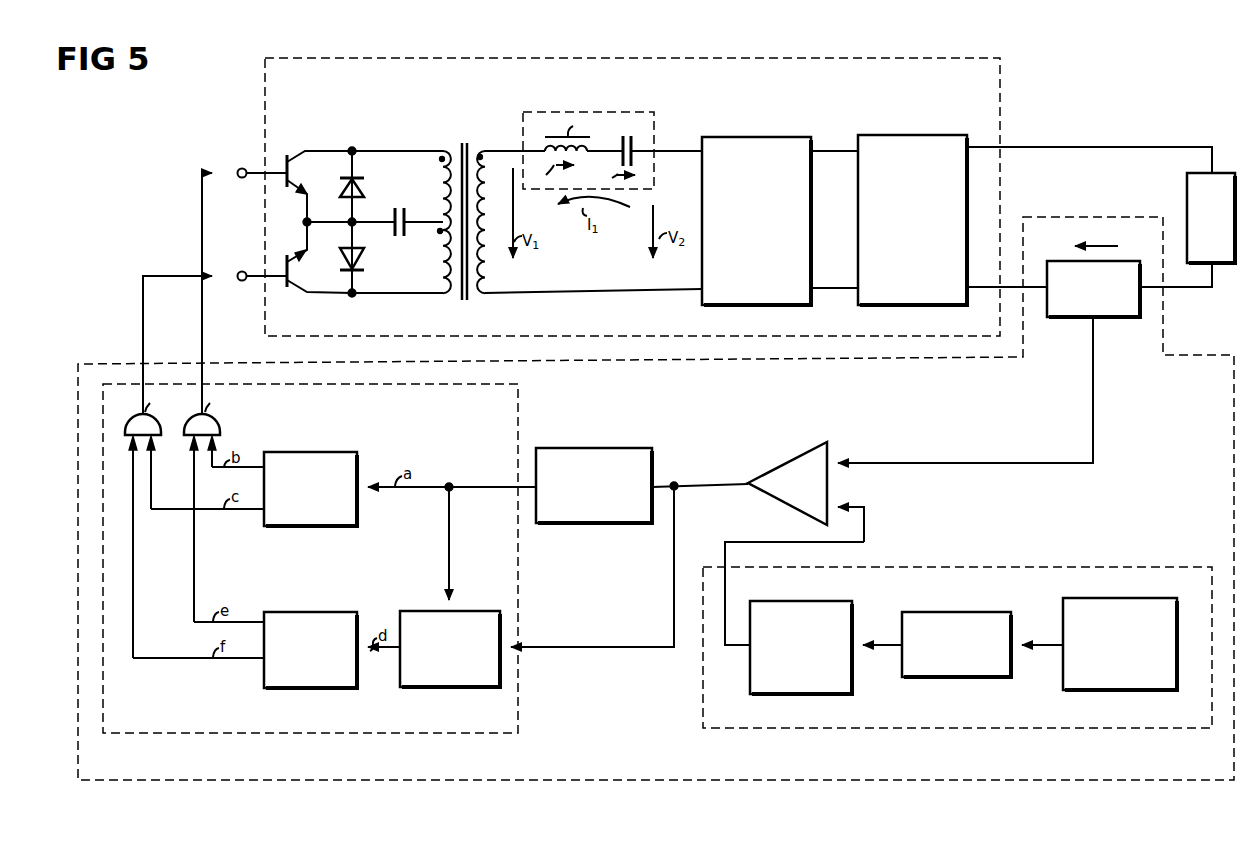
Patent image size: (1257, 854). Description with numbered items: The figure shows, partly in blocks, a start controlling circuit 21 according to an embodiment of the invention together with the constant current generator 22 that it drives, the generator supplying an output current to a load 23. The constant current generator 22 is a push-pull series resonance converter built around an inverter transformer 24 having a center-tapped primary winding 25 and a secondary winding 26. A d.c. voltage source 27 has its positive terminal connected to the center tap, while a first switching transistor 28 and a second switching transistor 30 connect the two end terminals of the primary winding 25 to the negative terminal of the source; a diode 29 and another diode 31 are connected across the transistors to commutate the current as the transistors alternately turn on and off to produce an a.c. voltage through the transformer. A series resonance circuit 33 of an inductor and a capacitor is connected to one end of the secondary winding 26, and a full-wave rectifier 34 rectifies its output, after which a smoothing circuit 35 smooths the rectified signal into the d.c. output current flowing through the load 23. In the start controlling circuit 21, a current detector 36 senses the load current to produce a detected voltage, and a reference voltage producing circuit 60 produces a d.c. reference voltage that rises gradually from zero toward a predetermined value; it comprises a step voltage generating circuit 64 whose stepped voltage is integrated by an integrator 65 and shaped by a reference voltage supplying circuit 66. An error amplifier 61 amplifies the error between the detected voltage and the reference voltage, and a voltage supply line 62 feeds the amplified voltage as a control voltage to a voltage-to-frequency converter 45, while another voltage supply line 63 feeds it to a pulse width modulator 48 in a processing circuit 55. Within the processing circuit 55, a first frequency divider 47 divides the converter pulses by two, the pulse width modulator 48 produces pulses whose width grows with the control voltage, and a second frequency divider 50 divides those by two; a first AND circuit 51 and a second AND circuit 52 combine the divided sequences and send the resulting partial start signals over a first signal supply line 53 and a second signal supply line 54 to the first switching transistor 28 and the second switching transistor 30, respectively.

The start controlling circuit 21 is at (1205, 355).
The constant current generator 22 is at (1000, 89).
The load 23 is at (1222, 172).
The inverter transformer 24 is at (465, 150).
The primary winding 25 is at (440, 176).
The secondary winding 26 is at (484, 165).
The d.c. voltage source 27 is at (404, 237).
The first switching transistor 28 is at (301, 154).
The diode 29 is at (341, 187).
The second switching transistor 30 is at (300, 294).
The diode 31 is at (341, 262).
The series resonance circuit 33 is at (622, 112).
The full-wave rectifier 34 is at (776, 137).
The smoothing circuit 35 is at (931, 135).
The current detector 36 is at (1075, 318).
The voltage-to-frequency converter 45 is at (620, 448).
The first frequency divider 47 is at (310, 472).
The pulse width modulator 48 is at (472, 611).
The second frequency divider 50 is at (310, 637).
The first AND circuit 51 is at (190, 447).
The second AND circuit 52 is at (129, 449).
The first signal supply line 53 is at (202, 312).
The second signal supply line 54 is at (143, 312).
The processing circuit 55 is at (519, 698).
The reference voltage producing circuit 60 is at (1166, 567).
The error amplifier 61 is at (778, 461).
The voltage supply line 62 is at (665, 485).
The voltage supply line 63 is at (585, 647).
The step voltage generating circuit 64 is at (1150, 598).
The integrator 65 is at (977, 612).
The reference voltage supplying circuit 66 is at (823, 601).